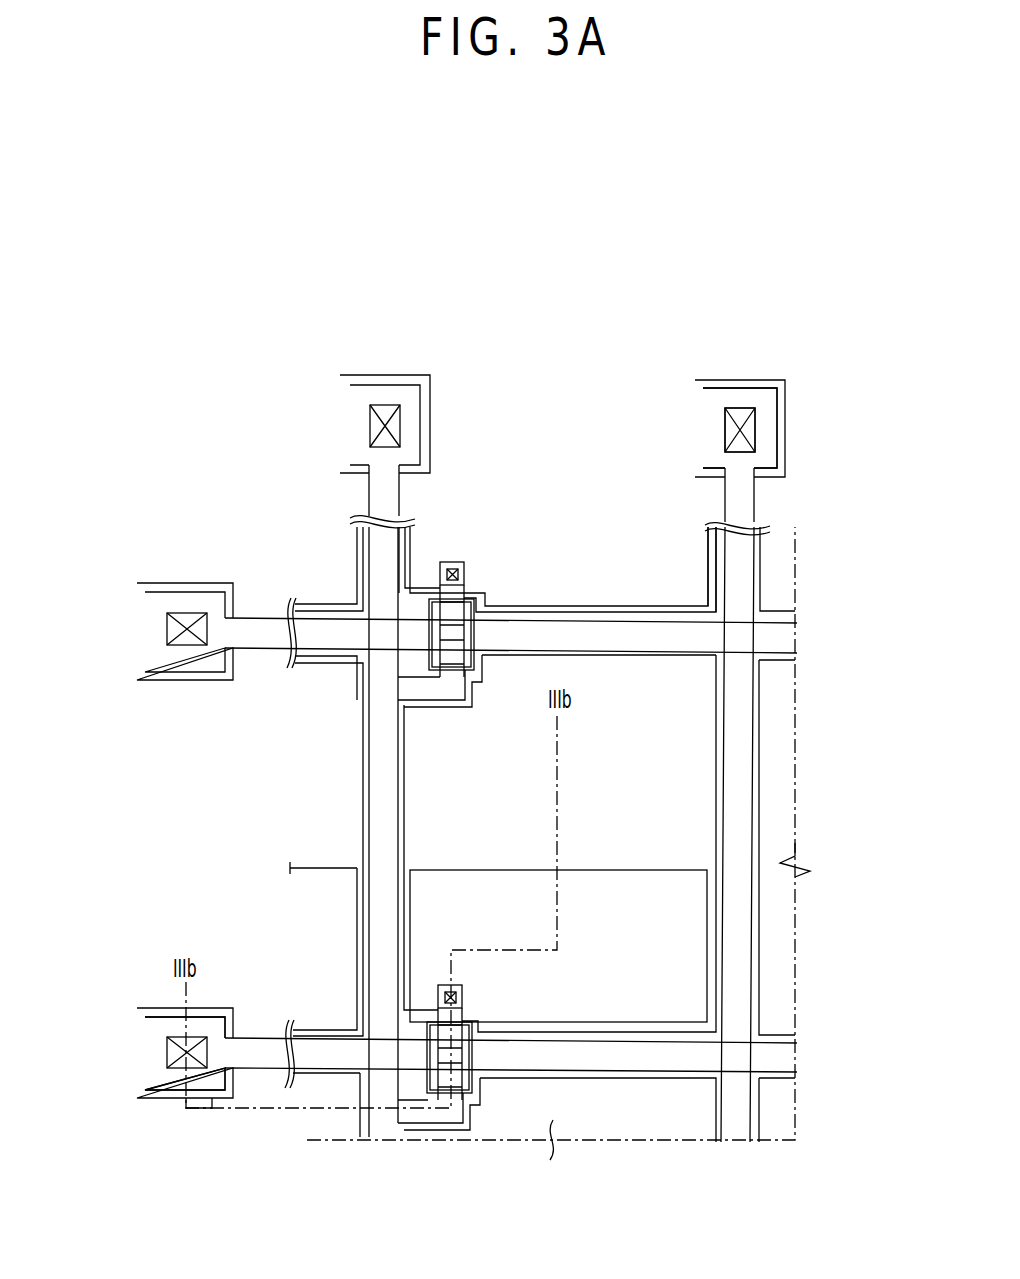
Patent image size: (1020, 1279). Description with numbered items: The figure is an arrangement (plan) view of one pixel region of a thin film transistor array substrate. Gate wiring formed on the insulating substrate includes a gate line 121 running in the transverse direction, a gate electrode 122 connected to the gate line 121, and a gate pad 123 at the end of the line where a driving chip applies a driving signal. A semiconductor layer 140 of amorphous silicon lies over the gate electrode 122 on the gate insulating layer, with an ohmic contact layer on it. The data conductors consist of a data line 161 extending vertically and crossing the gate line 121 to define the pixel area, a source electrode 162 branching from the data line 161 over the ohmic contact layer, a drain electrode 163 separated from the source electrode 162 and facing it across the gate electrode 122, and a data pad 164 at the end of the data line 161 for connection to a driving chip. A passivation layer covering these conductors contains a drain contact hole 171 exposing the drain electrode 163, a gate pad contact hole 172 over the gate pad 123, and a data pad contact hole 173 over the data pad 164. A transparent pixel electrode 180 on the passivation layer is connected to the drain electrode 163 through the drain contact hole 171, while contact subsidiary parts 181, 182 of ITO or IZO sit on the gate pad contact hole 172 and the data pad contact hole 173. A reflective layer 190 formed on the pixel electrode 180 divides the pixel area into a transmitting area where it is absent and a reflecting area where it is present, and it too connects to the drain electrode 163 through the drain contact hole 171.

The gate line 121 is at (621, 1063).
The gate electrode 122 is at (423, 1078).
The gate pad 123 is at (137, 1052).
The semiconductor layer 140 is at (473, 1052).
The data line 161 is at (318, 812).
The source electrode 162 is at (462, 1082).
The drain electrode 163 is at (470, 1020).
The data pad 164 is at (787, 426).
The drain contact hole 171 is at (310, 972).
The gate pad contact hole 172 is at (175, 1075).
The data pad contact hole 173 is at (740, 400).
The pixel electrode 180 is at (722, 785).
The contact subsidiary part 181 is at (212, 1100).
The contact subsidiary part 182 is at (787, 466).
The reflective layer 190 is at (708, 1000).